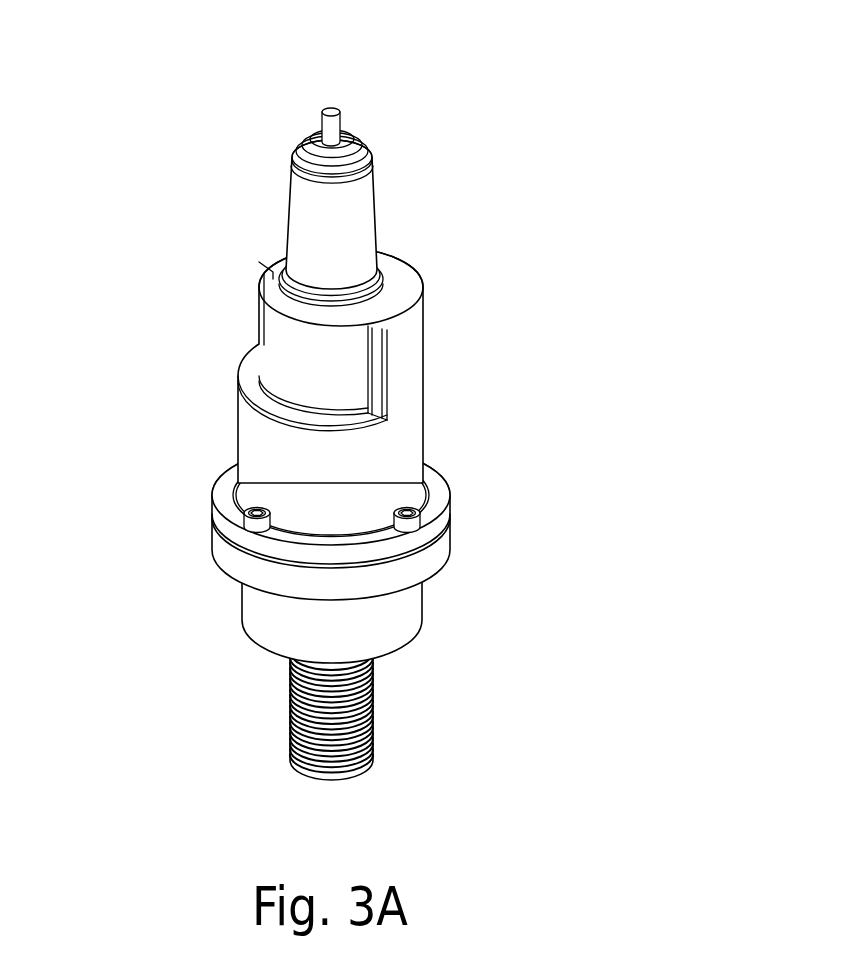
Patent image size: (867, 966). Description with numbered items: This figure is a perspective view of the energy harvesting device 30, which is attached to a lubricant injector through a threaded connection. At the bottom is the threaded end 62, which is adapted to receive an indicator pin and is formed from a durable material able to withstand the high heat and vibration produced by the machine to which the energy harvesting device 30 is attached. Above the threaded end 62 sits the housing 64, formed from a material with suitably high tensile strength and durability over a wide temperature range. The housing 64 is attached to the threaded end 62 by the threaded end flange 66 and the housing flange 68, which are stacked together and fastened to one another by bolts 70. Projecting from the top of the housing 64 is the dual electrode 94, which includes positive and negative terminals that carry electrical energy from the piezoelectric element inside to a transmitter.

The energy harvesting device 30 is at (140, 197).
The threaded end 62 is at (373, 722).
The housing 64 is at (395, 345).
The threaded end flange 66 is at (415, 558).
The housing flange 68 is at (228, 477).
The bolts 70 is at (447, 511).
The dual electrode 94 is at (340, 116).